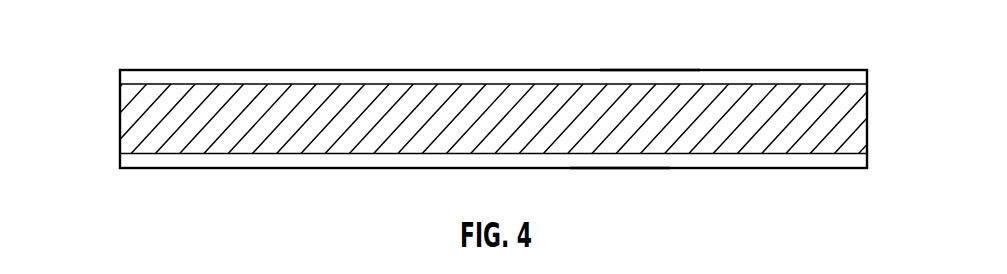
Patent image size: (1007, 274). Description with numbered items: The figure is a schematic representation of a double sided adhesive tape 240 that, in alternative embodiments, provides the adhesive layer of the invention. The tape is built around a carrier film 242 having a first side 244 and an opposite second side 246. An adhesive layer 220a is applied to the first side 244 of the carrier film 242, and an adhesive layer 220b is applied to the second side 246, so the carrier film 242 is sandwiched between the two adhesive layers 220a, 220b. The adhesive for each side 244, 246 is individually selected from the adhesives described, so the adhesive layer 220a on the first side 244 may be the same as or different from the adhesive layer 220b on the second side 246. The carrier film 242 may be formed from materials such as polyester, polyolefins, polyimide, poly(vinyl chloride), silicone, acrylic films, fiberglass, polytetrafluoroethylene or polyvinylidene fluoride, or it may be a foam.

The double sided adhesive tape 240 is at (107, 70).
The carrier film 242 is at (851, 121).
The first side 244 is at (765, 83).
The second side 246 is at (773, 154).
The adhesive layer 220a is at (633, 83).
The adhesive layer 220b is at (618, 160).